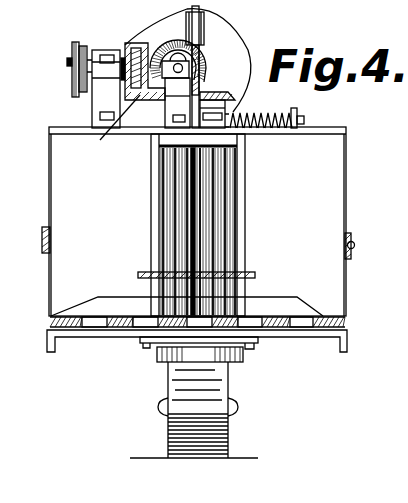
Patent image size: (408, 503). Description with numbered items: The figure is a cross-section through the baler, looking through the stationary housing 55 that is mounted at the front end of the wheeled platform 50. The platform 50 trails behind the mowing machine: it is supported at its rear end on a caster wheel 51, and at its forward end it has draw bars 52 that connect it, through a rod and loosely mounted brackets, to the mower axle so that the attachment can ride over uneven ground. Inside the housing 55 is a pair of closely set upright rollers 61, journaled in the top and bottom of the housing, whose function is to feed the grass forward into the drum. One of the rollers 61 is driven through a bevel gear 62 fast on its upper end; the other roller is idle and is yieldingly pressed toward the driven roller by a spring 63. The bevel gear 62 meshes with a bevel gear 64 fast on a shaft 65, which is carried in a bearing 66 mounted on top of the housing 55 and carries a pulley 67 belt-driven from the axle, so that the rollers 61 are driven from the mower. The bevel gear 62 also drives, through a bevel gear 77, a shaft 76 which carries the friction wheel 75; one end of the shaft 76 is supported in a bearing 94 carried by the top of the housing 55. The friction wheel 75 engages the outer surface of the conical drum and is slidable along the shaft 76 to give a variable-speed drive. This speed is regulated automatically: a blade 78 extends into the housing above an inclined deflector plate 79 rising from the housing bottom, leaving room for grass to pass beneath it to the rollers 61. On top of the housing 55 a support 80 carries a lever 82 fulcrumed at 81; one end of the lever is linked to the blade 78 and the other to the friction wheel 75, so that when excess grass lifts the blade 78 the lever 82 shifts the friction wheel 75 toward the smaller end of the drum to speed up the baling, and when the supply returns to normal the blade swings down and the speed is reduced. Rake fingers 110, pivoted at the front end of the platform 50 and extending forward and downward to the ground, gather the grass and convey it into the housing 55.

The wheeled platform 50 is at (95, 337).
The caster wheel 51 is at (218, 445).
The draw bars 52 is at (45, 253).
The housing 55 is at (338, 219).
The upright rollers 61 is at (230, 220).
The bevel gear 62 is at (230, 92).
The spring 63 is at (290, 120).
The bevel gear 64 is at (131, 44).
The shaft 65 is at (72, 70).
The bearing 66 is at (96, 50).
The pulley 67 is at (68, 62).
The friction wheel 75 is at (222, 47).
The shaft 76 is at (178, 75).
The bevel gear 77 is at (156, 48).
The blade 78 is at (248, 276).
The deflector plate 79 is at (277, 305).
The support 80 is at (206, 77).
The fulcrum 81 is at (196, 34).
The lever 82 is at (194, 30).
The bearing 94 is at (104, 129).
The rake fingers 110 is at (278, 339).